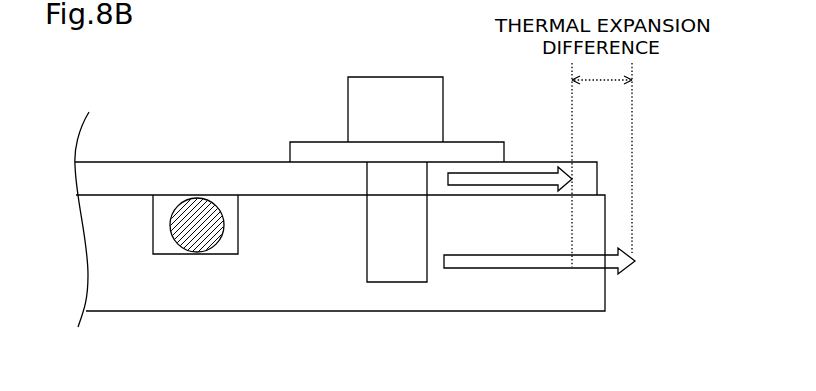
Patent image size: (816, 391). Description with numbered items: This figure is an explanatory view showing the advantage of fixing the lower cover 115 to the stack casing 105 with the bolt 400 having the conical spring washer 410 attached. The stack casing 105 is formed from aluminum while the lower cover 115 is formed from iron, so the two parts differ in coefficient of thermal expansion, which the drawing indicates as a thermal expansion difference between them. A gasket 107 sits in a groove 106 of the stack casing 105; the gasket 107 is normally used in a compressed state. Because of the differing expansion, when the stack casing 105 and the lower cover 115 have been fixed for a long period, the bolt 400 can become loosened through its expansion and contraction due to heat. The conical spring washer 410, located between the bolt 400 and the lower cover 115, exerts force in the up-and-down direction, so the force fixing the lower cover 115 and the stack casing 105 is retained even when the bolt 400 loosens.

The stack casing 105 is at (605, 292).
The lower cover 115 is at (545, 160).
The conical spring washer 410 is at (290, 150).
The bolt 400 is at (443, 97).
The groove 106 is at (238, 223).
The gasket 107 is at (207, 248).